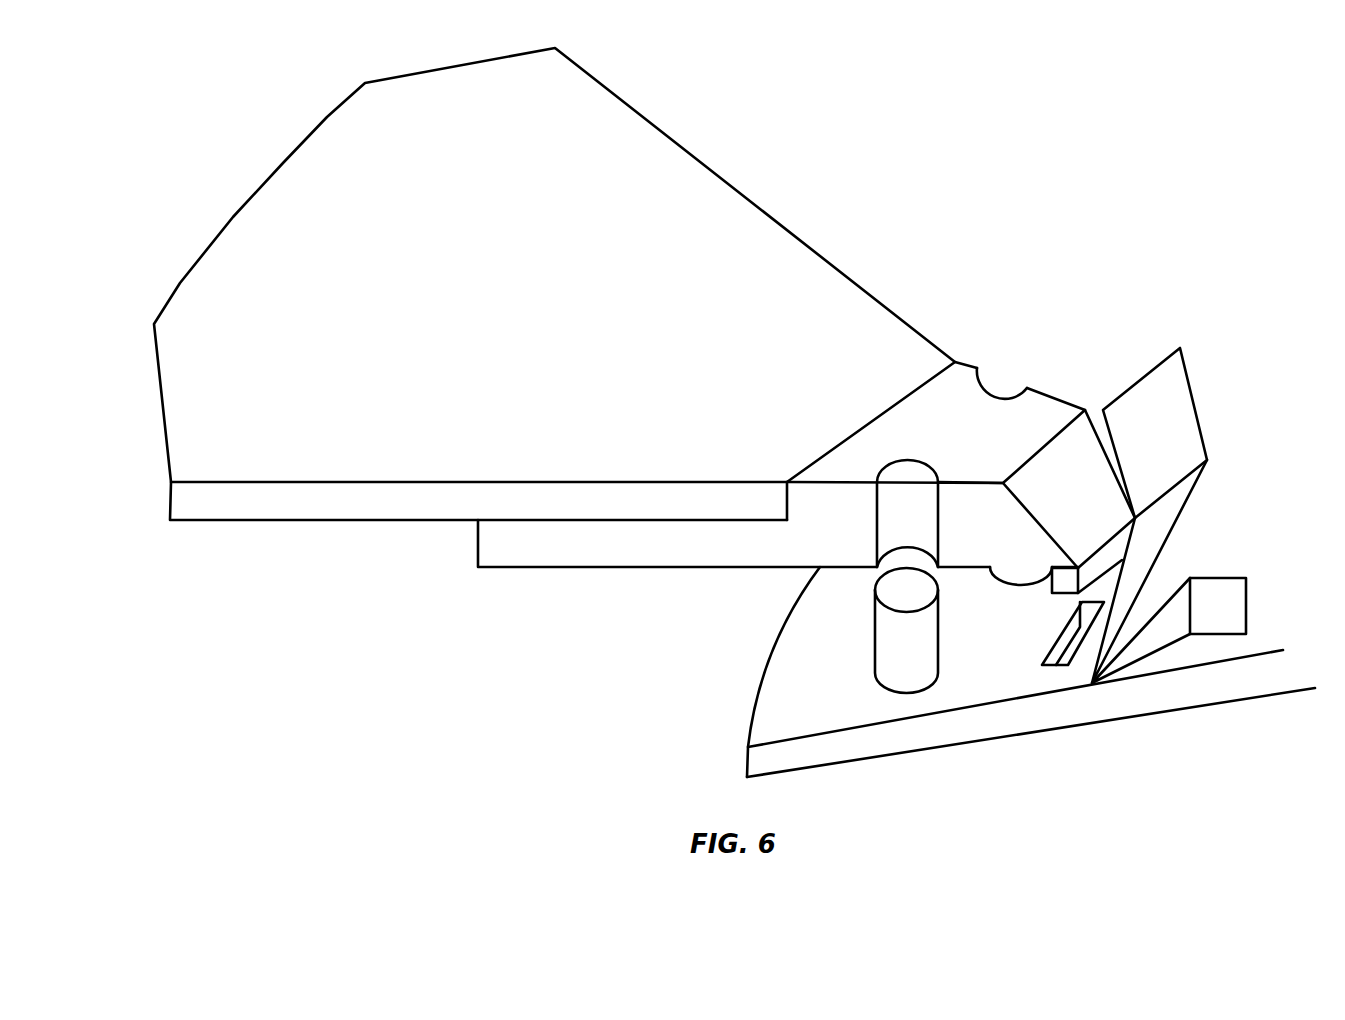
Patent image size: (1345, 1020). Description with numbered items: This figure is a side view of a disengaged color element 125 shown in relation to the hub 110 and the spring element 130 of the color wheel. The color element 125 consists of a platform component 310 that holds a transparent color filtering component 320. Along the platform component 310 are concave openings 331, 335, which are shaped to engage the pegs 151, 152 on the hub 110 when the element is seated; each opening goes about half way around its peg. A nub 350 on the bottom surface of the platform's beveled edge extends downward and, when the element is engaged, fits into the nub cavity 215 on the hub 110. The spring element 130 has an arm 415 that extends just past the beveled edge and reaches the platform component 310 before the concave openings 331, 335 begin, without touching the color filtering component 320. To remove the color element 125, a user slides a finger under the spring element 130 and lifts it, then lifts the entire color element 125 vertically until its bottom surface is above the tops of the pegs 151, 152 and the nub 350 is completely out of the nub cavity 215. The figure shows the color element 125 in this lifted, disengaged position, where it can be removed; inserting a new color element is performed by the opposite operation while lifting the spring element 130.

The hub 110 is at (776, 717).
The color element 125 is at (596, 511).
The spring element 130 is at (1237, 602).
The peg 151 is at (1032, 573).
The peg 152 is at (879, 651).
The nub cavity 215 is at (1053, 650).
The platform component 310 is at (939, 444).
The color filtering component 320 is at (464, 284).
The concave opening 331 is at (1000, 383).
The concave opening 335 is at (883, 516).
The nub 350 is at (1065, 582).
The arm 415 is at (1129, 444).